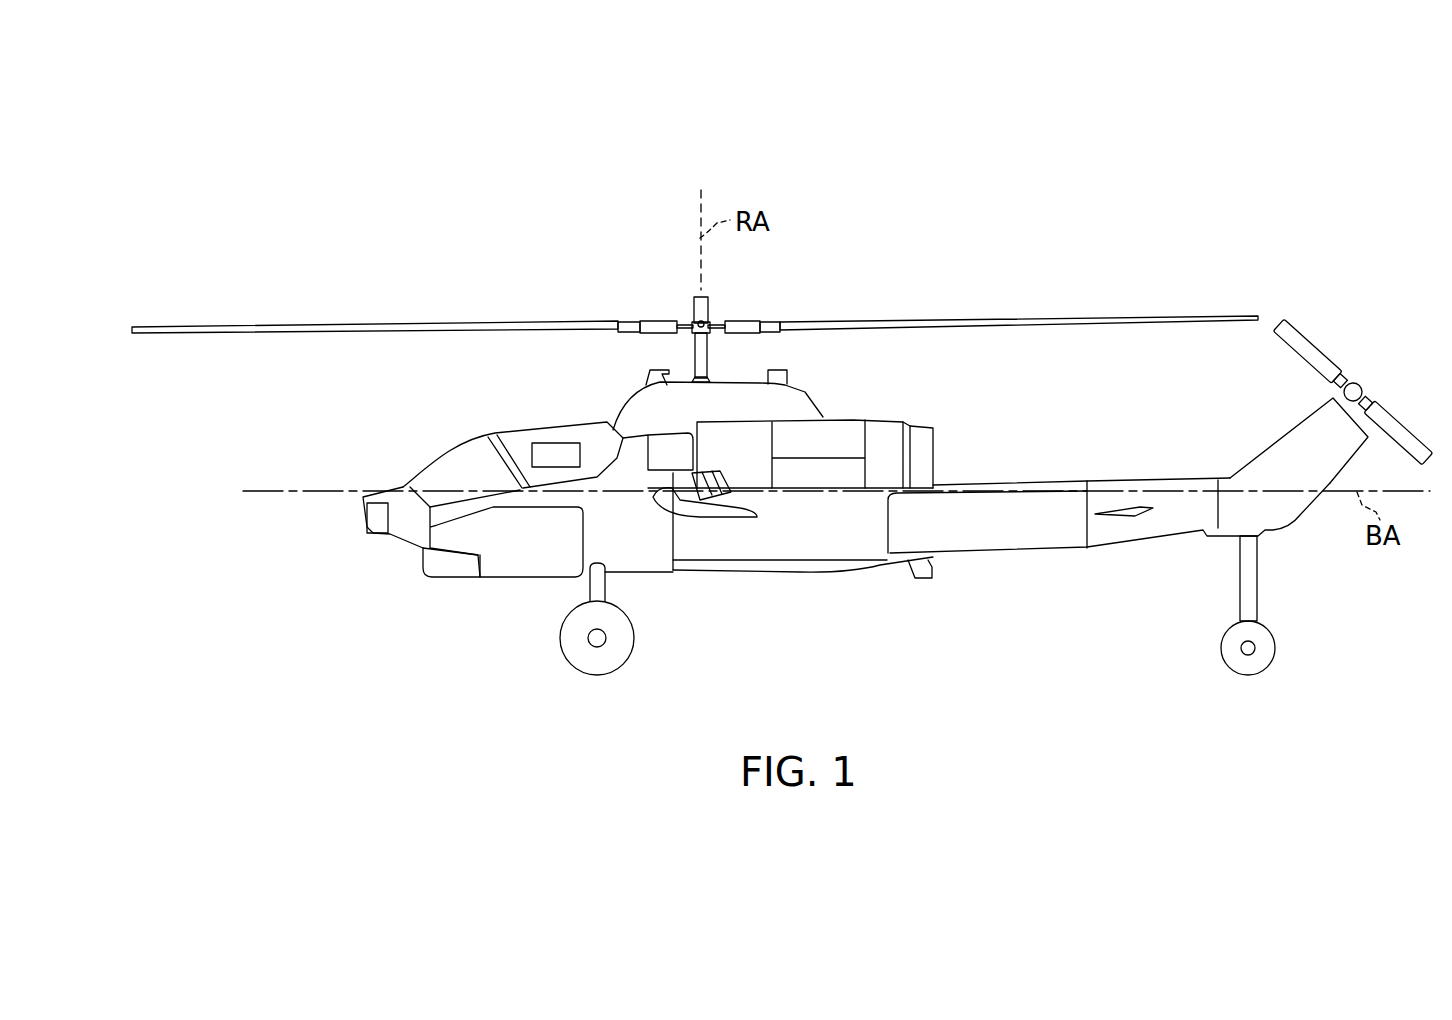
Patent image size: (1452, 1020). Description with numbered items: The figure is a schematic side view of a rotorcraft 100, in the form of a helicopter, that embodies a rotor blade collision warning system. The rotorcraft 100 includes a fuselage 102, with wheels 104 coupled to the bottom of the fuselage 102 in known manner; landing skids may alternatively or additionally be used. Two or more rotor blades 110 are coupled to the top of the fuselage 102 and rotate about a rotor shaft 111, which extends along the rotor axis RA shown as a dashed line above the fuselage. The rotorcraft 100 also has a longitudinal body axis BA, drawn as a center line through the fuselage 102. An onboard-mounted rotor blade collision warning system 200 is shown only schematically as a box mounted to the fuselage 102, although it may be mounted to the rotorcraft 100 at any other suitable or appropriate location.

The rotorcraft 100 is at (357, 173).
The fuselage 102 is at (993, 480).
The wheels 104 is at (560, 638).
The rotor blades 110 is at (565, 323).
The rotor shaft 111 is at (708, 366).
The rotor blade collision warning system 200 is at (557, 443).